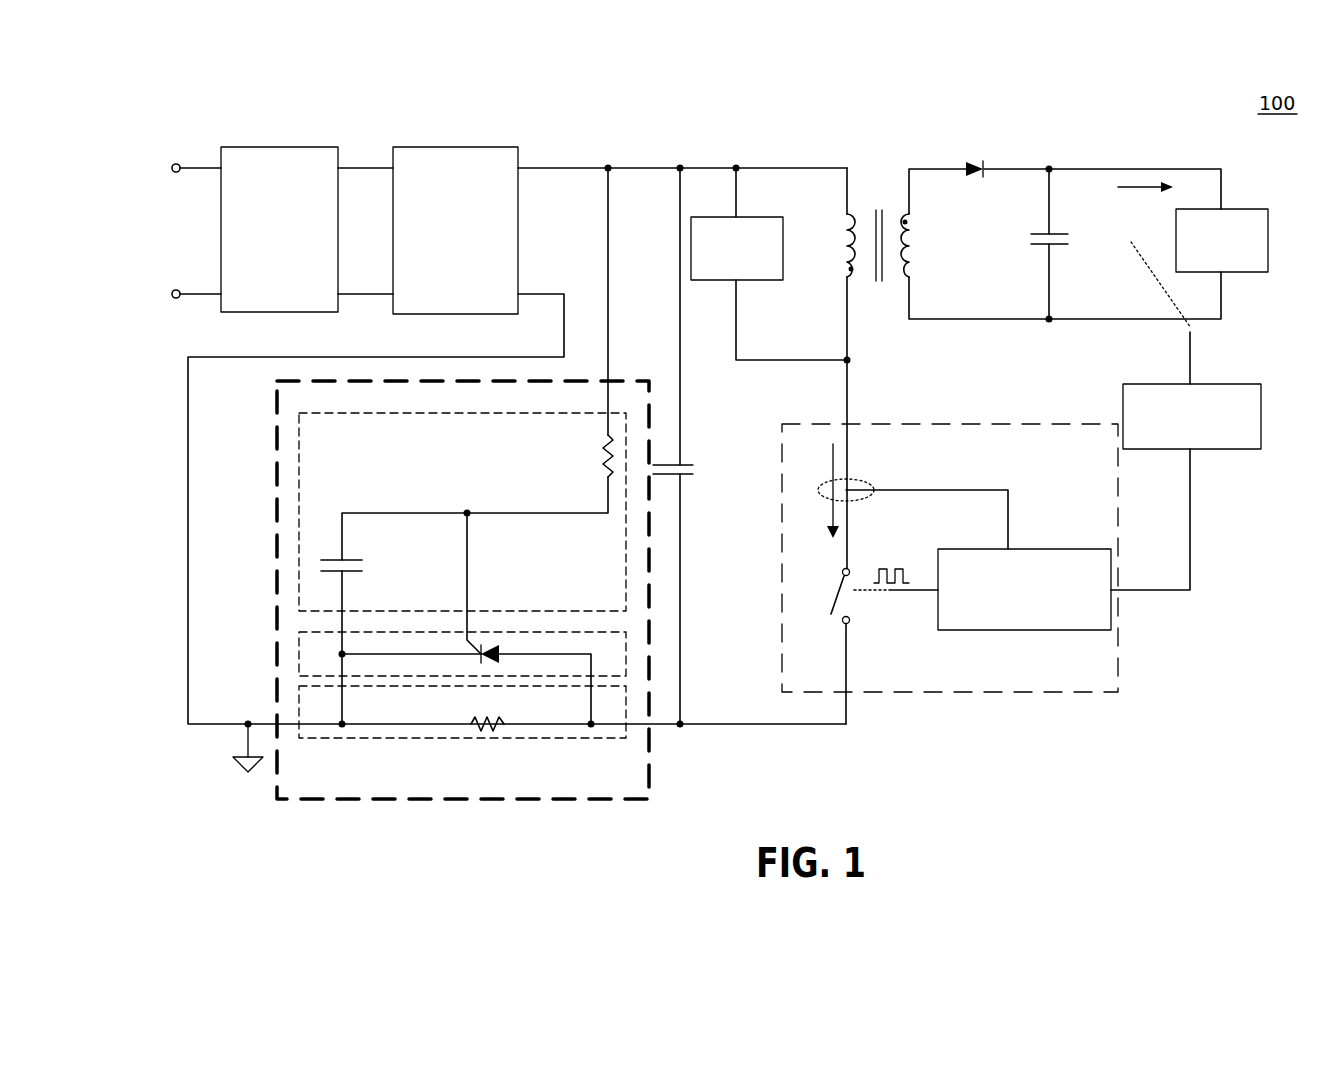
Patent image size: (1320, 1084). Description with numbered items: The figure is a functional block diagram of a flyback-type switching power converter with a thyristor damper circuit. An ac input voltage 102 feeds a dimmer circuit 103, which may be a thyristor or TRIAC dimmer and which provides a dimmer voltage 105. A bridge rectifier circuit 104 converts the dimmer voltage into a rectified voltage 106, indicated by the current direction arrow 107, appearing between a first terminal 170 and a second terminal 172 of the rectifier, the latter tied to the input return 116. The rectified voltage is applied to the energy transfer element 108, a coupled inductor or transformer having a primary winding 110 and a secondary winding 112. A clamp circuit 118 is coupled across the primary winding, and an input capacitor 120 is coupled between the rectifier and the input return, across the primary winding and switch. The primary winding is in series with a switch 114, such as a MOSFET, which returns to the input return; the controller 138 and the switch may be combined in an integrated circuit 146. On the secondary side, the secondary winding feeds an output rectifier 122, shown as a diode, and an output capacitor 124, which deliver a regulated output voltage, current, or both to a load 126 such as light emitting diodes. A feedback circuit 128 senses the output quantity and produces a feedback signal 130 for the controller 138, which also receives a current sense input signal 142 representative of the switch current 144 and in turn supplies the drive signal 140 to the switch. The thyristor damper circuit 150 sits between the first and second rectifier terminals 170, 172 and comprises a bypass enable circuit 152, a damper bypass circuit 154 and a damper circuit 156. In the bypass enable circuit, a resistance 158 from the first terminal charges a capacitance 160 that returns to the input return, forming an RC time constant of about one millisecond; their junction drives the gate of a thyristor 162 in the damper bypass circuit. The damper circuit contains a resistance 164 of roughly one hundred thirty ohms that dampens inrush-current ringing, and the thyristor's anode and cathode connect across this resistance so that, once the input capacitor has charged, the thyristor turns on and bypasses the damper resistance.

The ac input voltage VAC 102 is at (152, 192).
The dimmer circuit 103 is at (266, 146).
The bridge rectifier circuit 104 is at (437, 146).
The dimmer voltage 105 is at (348, 206).
The rectified voltage VRECT 106 is at (555, 218).
The rectified current direction 107 is at (568, 155).
The energy transfer element T1 108 is at (876, 308).
The primary winding 110 is at (842, 244).
The secondary winding 112 is at (915, 244).
The switch S1 114 is at (782, 588).
The input return 116 is at (238, 778).
The clamp circuit 118 is at (752, 278).
The input capacitor CF 120 is at (698, 444).
The rectifier D1 122 is at (960, 152).
The output capacitor C1 124 is at (1017, 262).
The load 126 is at (1245, 206).
The feedback circuit 128 is at (1120, 400).
The feedback signal UFB 130 is at (1240, 522).
The controller 138 is at (1034, 546).
The drive signal 140 is at (897, 558).
The current sense input signal 142 is at (980, 472).
The switch current ID 144 is at (778, 458).
The integrated circuit 146 is at (947, 420).
The thyristor damper circuit 150 is at (272, 446).
The bypass enable circuit 152 is at (412, 412).
The damper bypass circuit 154 is at (298, 658).
The damper circuit 156 is at (298, 706).
The resistance 158 is at (590, 454).
The capacitance 160 is at (372, 570).
The thyristor 162 is at (500, 642).
The resistance 164 is at (505, 730).
The first terminal 170 is at (607, 166).
The second terminal 172 is at (563, 293).